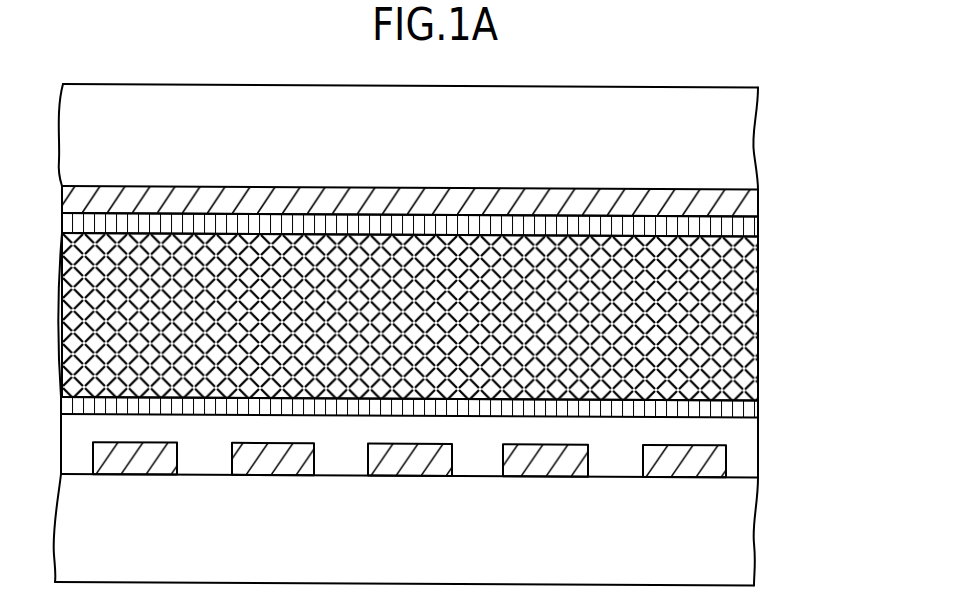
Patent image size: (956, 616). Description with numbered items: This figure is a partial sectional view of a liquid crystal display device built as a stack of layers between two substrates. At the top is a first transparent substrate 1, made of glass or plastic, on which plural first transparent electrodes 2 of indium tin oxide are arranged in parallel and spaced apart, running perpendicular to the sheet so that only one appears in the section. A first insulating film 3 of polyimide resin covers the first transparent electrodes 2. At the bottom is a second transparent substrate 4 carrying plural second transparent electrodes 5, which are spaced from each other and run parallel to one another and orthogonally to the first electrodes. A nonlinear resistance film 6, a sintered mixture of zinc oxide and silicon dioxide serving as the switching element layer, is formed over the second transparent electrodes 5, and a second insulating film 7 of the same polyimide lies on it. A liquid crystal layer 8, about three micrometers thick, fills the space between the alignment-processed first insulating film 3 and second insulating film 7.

The first transparent substrate 1 is at (742, 134).
The first transparent electrodes 2 is at (746, 204).
The first insulating film 3 is at (748, 229).
The second transparent substrate 4 is at (735, 538).
The second transparent electrodes 5 is at (270, 472).
The nonlinear resistance film 6 is at (740, 449).
The second insulating film 7 is at (748, 406).
The liquid crystal layer 8 is at (745, 313).